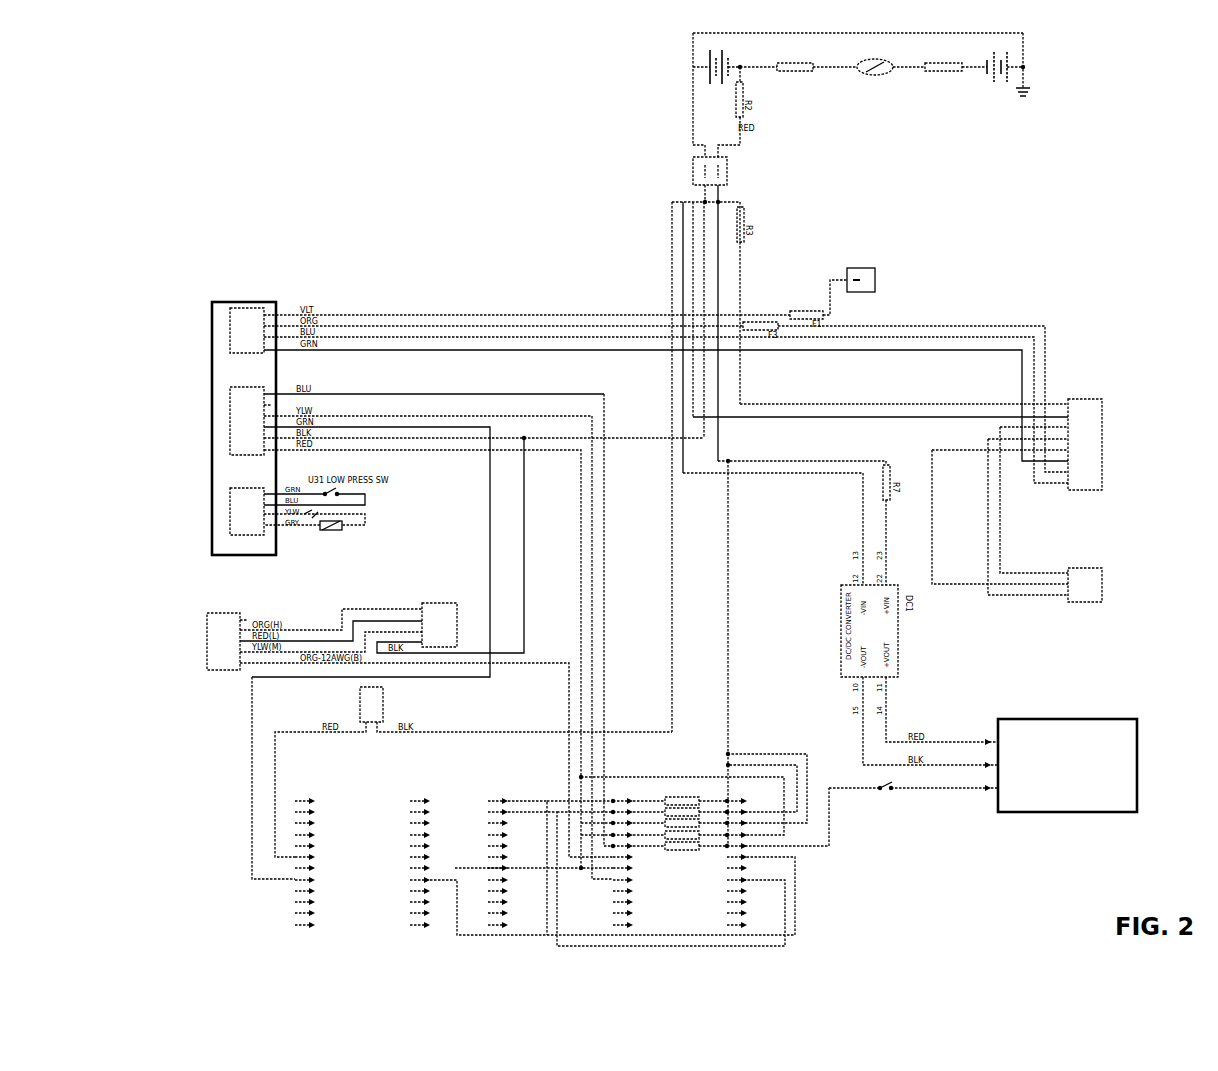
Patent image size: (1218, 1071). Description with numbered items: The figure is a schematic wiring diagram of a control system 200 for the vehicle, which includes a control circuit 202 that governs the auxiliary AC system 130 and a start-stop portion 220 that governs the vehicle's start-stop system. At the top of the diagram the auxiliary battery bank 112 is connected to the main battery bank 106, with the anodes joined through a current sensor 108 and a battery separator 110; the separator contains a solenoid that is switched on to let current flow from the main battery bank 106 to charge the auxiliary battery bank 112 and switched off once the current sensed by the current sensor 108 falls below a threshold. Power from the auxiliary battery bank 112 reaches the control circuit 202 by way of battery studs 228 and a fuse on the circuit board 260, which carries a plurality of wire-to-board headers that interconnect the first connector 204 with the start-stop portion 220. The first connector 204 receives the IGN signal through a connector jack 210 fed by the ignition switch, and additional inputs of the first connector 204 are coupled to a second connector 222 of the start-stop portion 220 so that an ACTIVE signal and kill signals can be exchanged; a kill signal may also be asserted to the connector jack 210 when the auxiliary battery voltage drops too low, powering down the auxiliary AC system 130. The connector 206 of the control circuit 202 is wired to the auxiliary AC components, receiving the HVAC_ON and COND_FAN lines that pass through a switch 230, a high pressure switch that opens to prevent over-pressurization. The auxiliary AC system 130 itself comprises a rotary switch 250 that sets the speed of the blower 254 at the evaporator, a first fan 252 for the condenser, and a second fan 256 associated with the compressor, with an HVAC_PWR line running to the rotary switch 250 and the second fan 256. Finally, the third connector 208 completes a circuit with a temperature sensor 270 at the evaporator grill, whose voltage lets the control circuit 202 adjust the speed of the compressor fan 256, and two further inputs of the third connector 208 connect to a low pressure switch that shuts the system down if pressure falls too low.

The main battery bank 106 is at (1012, 56).
The current sensor 108 is at (1102, 598).
The battery separator 110 is at (875, 78).
The auxiliary battery bank 112 is at (706, 80).
The auxiliary AC system 130 is at (158, 625).
The control system 200 is at (146, 367).
The control circuit 202 is at (212, 442).
The first connector 204 is at (228, 342).
The second connector 206 is at (228, 398).
The third connector 208 is at (228, 515).
The connector jack 210 is at (878, 289).
The start-stop portion 220 is at (1080, 300).
The second connector of start-stop portion 222 is at (1102, 467).
The battery studs 228 is at (727, 175).
The switch 230 is at (886, 793).
The rotary switch 250 is at (205, 612).
The first fan 252 is at (372, 722).
The blower 254 is at (457, 621).
The second fan 256 is at (1137, 770).
The circuit board 260 is at (808, 900).
The temperature sensor 270 is at (330, 534).